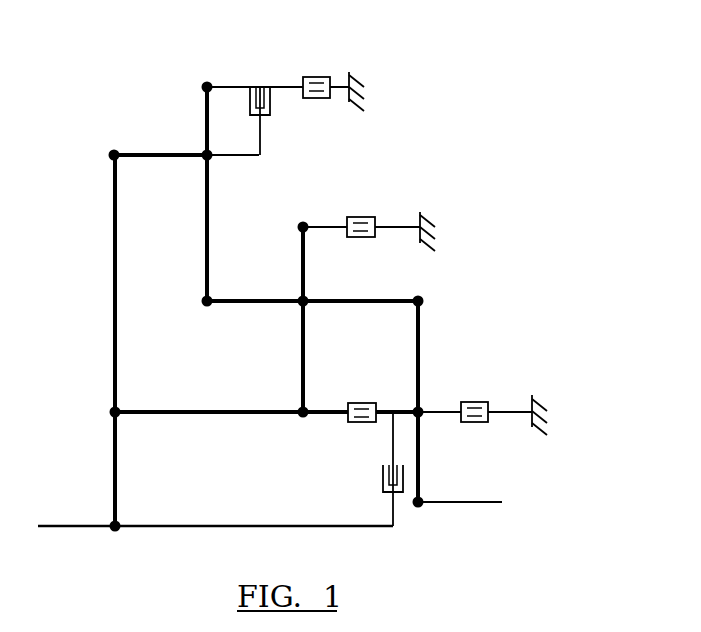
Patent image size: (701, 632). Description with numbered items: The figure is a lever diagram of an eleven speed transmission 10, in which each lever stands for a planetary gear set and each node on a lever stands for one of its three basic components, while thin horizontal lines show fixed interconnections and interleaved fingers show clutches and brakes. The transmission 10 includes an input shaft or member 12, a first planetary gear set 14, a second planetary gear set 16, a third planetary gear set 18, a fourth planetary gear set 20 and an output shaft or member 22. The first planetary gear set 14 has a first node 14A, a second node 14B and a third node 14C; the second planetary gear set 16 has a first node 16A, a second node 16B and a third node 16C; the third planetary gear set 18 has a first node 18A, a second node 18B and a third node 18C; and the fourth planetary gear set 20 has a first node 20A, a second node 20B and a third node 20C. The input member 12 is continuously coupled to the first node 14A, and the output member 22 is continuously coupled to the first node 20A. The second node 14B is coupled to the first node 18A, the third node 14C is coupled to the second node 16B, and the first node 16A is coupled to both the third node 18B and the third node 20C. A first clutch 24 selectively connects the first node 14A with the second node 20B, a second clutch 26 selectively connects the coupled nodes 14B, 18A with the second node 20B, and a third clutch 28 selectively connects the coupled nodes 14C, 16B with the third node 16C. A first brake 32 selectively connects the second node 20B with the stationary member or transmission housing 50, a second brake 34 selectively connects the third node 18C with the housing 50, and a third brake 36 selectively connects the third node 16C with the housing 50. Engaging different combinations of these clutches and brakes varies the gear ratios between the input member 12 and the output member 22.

The eleven speed transmission 10 is at (506, 93).
The input shaft or member 12 is at (53, 528).
The first planetary gear set 14 is at (137, 146).
The first node of the first planetary gear set 14A is at (120, 532).
The second node of the first planetary gear set 14B is at (110, 412).
The third node of the first planetary gear set 14C is at (112, 150).
The second planetary gear set 16 is at (229, 78).
The first node of the second planetary gear set 16A is at (201, 302).
The second node of the second planetary gear set 16B is at (203, 158).
The third node of the second planetary gear set 16C is at (203, 83).
The third planetary gear set 18 is at (324, 219).
The first node of the third planetary gear set 18A is at (300, 418).
The third node of the third planetary gear set 18B is at (299, 306).
The third node of the third planetary gear set 18C is at (301, 223).
The fourth planetary gear set 20 is at (403, 320).
The first node of the fourth planetary gear set 20A is at (417, 507).
The second node of the fourth planetary gear set 20B is at (413, 410).
The third node of the fourth planetary gear set 20C is at (425, 301).
The output shaft or member 22 is at (480, 505).
The first clutch 24 is at (383, 475).
The second clutch 26 is at (358, 424).
The third clutch 28 is at (271, 98).
The first brake 32 is at (478, 402).
The second brake 34 is at (357, 237).
The third brake 36 is at (315, 77).
The stationary member or transmission housing 50 is at (350, 72).